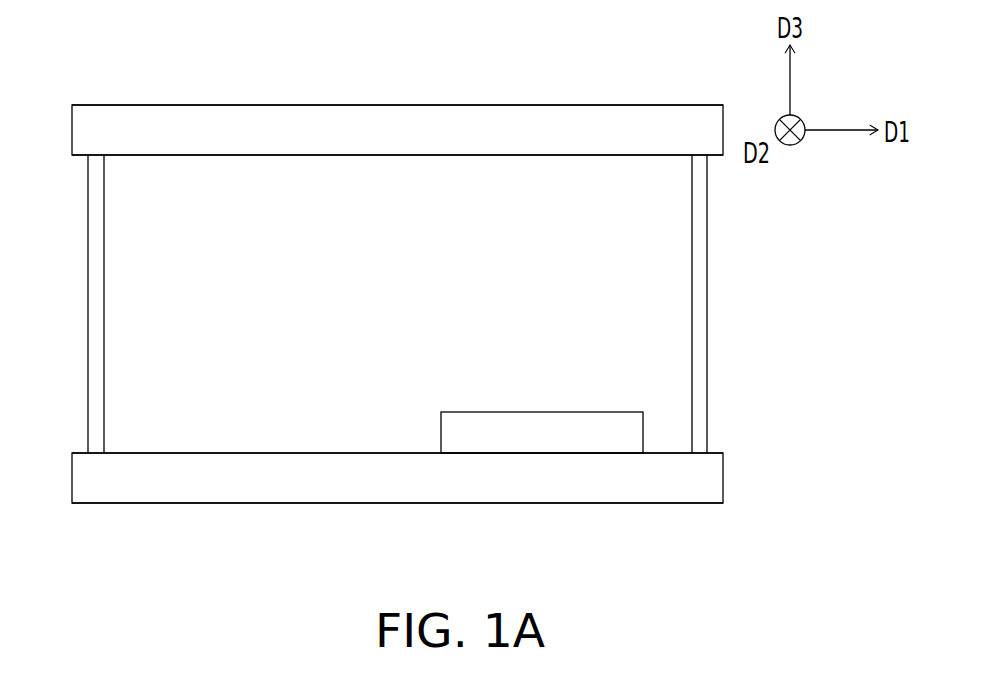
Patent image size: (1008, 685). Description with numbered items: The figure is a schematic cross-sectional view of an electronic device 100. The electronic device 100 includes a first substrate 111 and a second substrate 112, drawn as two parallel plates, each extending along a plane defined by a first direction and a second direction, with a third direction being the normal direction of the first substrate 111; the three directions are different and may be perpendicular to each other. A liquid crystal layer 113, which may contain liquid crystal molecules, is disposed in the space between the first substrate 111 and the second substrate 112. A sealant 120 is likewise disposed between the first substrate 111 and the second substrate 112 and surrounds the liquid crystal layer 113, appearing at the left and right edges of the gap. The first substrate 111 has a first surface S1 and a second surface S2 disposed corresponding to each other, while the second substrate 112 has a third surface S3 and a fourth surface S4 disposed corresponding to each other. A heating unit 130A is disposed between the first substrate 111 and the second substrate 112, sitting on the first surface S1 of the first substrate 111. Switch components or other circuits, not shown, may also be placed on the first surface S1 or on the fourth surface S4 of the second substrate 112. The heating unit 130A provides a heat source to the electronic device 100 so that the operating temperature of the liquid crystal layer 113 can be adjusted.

The electronic device 100 is at (427, 293).
The first substrate 111 is at (715, 478).
The second substrate 112 is at (582, 126).
The liquid crystal layer 113 is at (672, 323).
The sealant 120 is at (96, 305).
The heating unit 130A is at (635, 432).
The first surface S1 is at (147, 452).
The second surface S2 is at (148, 505).
The third surface S3 is at (147, 104).
The fourth surface S4 is at (148, 157).